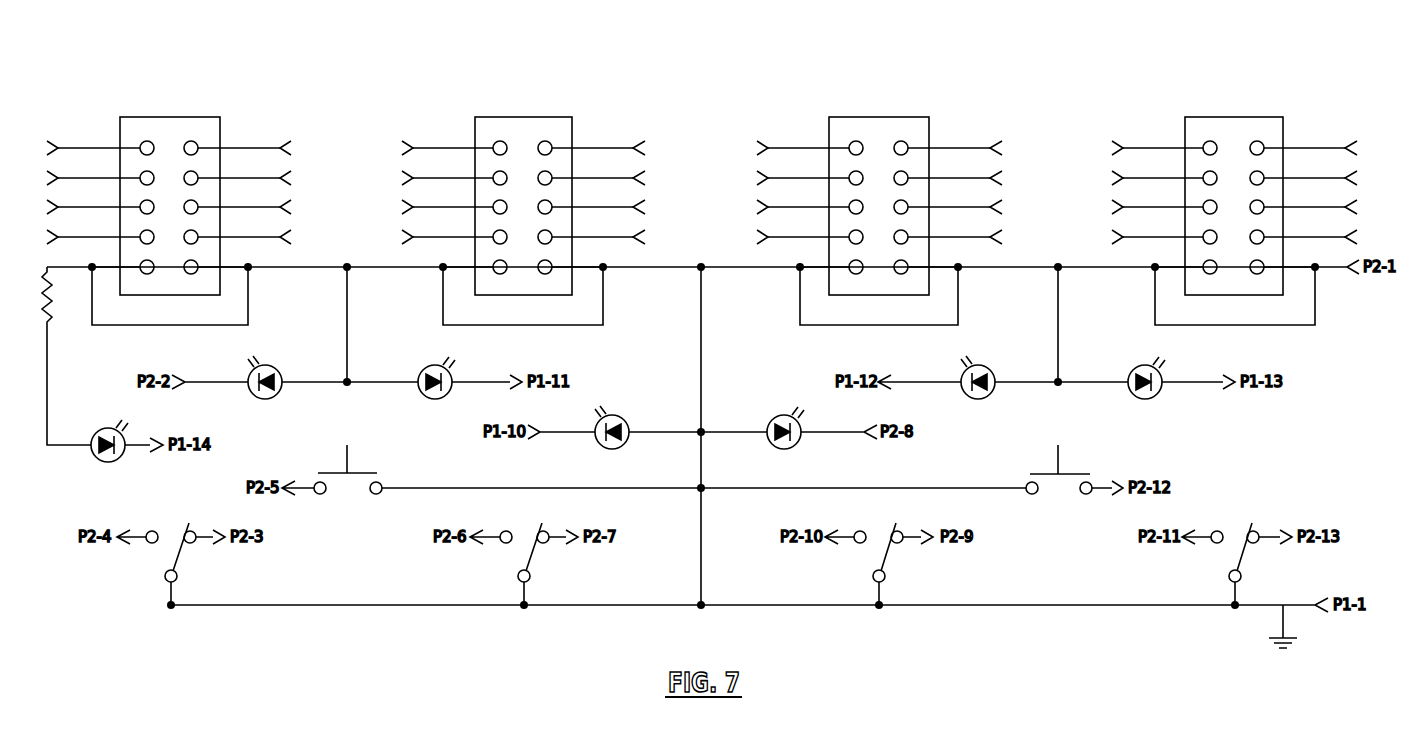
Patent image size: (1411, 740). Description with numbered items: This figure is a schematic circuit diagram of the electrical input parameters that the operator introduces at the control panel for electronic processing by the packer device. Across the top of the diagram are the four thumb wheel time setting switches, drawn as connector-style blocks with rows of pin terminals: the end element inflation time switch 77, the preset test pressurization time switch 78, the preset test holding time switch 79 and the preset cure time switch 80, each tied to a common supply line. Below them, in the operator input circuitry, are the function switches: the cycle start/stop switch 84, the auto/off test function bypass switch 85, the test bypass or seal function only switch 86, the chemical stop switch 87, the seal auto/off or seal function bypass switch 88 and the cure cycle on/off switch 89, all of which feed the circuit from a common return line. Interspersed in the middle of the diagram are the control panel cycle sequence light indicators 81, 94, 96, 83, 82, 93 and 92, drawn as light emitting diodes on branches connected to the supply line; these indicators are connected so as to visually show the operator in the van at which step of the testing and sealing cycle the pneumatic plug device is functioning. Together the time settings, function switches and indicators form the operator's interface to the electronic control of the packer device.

The end element inflation time thumb wheel switch 77 is at (1233, 113).
The preset test pressurization time thumb wheel switch 78 is at (869, 113).
The preset test holding time thumb wheel switch 79 is at (530, 113).
The preset cure time thumb wheel switch 80 is at (166, 113).
The cycle sequence light indicator 81 is at (112, 462).
The cycle sequence light indicator 82 is at (773, 417).
The cycle sequence light indicator 83 is at (622, 418).
The cycle start/stop switch 84 is at (1248, 519).
The auto/off test function bypass switch 85 is at (848, 560).
The test bypass or seal function only switch 86 is at (1057, 506).
The chemical stop switch 87 is at (346, 506).
The seal auto/off or seal function bypass switch 88 is at (490, 565).
The cure cycle on/off switch 89 is at (140, 570).
The cycle sequence light indicator 92 is at (1157, 395).
The cycle sequence light indicator 93 is at (988, 366).
The cycle sequence light indicator 94 is at (276, 366).
The cycle sequence light indicator 96 is at (448, 370).